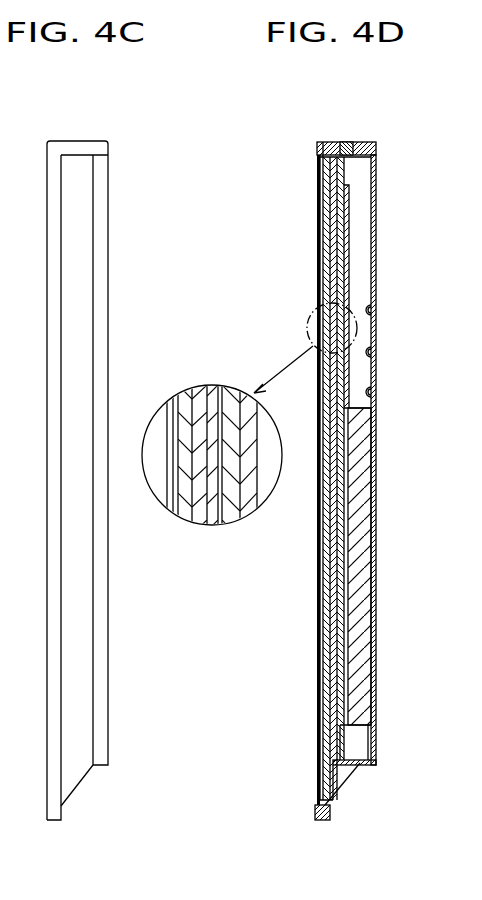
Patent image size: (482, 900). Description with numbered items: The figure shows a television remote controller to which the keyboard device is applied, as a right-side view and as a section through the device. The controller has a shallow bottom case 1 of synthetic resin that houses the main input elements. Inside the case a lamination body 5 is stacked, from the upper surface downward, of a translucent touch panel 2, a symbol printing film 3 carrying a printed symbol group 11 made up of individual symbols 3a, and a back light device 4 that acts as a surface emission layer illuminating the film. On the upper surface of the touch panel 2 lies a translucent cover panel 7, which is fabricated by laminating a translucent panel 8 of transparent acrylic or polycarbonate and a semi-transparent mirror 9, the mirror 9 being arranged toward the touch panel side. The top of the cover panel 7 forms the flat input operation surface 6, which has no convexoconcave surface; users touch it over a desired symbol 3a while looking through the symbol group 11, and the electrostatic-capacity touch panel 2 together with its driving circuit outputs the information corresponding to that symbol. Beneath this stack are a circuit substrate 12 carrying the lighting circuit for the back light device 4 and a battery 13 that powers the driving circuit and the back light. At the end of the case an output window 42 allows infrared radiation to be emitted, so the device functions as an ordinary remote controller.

In FIG. 4C, the bottom case 1 is at (84, 727).
In FIG. 4D, the bottom case 1 is at (373, 633).
In FIG. 4D, the touch panel 2 is at (207, 525).
In FIG. 4D, the symbol printing film 3 is at (212, 525).
In FIG. 4C, the symbol 3a is at (15, 501).
In FIG. 4D, the back light device 4 is at (218, 525).
In FIG. 4D, the lamination body 5 is at (192, 615).
In FIG. 4D, the input operation surface 6 is at (168, 412).
In FIG. 4D, the cover panel 7 is at (320, 235).
In FIG. 4D, the translucent panel 8 is at (188, 522).
In FIG. 4D, the semi-transparent mirror 9 is at (196, 523).
In FIG. 4C, the symbol group 11 is at (0, 140).
In FIG. 4D, the substrate 12 is at (245, 523).
In FIG. 4D, the battery 13 is at (360, 518).
In FIG. 4D, the output window for an infrared radiation 42 is at (347, 142).